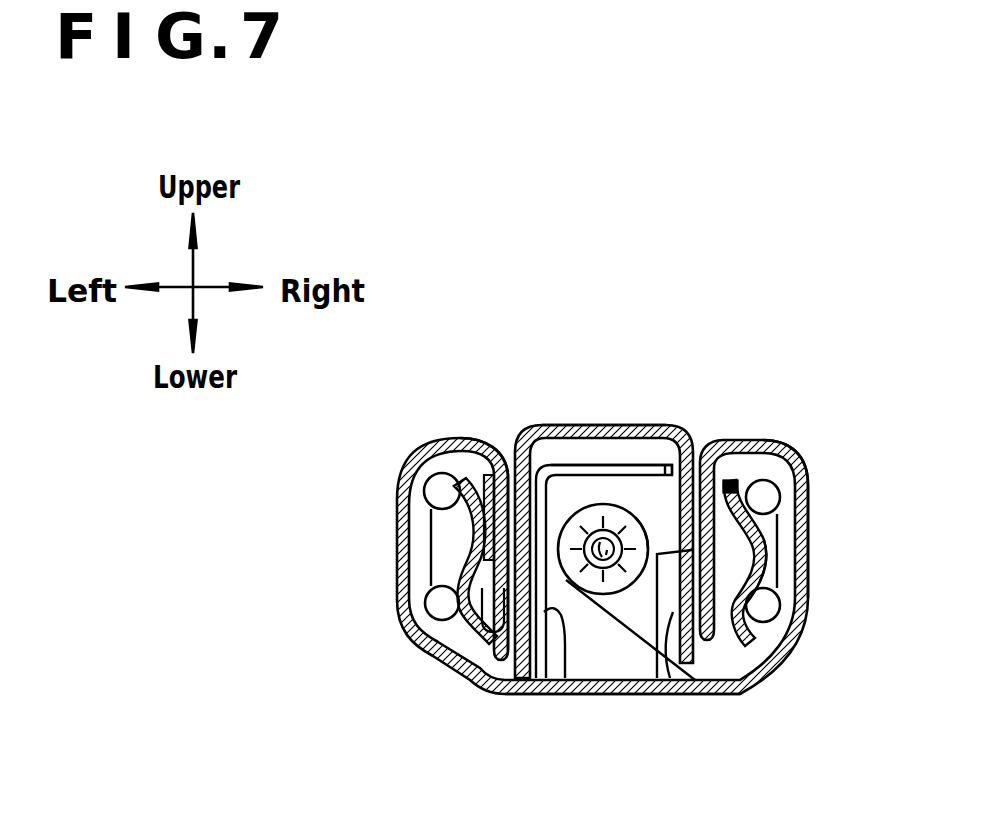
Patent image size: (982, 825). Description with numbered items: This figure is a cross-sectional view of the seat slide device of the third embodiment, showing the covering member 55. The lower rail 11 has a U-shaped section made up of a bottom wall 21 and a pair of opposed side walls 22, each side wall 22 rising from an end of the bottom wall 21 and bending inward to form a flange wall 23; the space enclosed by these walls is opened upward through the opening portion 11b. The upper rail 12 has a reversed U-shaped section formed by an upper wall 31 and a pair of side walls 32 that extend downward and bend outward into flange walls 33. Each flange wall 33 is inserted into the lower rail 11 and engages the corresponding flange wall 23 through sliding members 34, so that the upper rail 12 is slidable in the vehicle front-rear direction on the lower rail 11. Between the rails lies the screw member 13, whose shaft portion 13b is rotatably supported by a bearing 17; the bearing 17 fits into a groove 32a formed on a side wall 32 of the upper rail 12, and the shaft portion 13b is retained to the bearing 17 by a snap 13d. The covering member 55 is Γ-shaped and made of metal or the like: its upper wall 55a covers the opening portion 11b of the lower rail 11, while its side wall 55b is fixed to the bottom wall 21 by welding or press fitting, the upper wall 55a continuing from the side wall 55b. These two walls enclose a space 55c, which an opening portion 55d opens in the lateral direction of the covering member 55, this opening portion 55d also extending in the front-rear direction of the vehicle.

The lower rail 11 is at (440, 431).
The opening portion 11b is at (501, 430).
The upper rail 12 is at (690, 415).
The screw member 13 is at (622, 653).
The shaft portion 13b is at (612, 568).
The snap 13d is at (645, 535).
The bearing 17 is at (712, 674).
The bottom wall 21 is at (490, 694).
The side walls 22 is at (398, 523).
The flange wall 23 is at (742, 476).
The upper wall 31 is at (596, 426).
The side walls 32 is at (748, 572).
The groove 32a is at (757, 655).
The flange wall 33 is at (772, 545).
The sliding members 34 is at (792, 472).
The covering member 55 is at (569, 452).
The upper wall 55a is at (625, 465).
The side wall 55b is at (564, 652).
The space 55c is at (618, 646).
The opening portion 55d is at (653, 651).